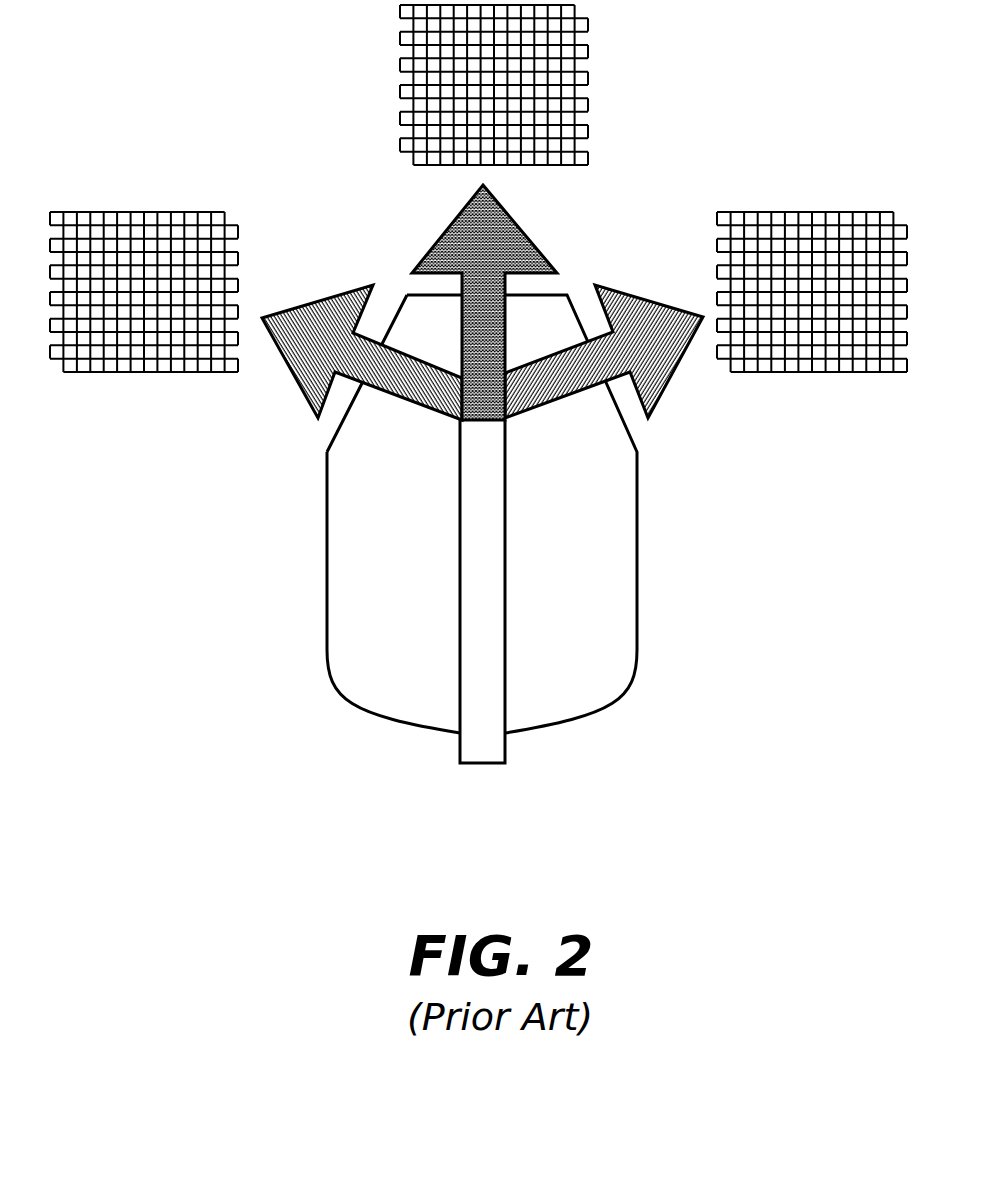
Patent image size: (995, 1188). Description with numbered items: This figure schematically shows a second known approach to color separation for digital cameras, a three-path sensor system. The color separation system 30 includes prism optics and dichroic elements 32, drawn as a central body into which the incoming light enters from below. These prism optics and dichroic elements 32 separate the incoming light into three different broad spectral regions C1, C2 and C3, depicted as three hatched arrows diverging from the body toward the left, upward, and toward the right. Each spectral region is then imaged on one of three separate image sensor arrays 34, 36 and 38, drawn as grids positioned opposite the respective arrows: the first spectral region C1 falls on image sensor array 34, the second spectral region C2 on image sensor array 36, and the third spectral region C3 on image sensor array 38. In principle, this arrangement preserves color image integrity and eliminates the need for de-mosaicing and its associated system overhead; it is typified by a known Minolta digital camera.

The color separation system 30 is at (733, 142).
The prism optics and dichroic elements 32 is at (623, 560).
The image sensor array 34 is at (152, 212).
The image sensor array 36 is at (583, 78).
The image sensor array 38 is at (832, 372).
The broad spectral region C1 is at (300, 310).
The broad spectral region C2 is at (503, 230).
The broad spectral region C3 is at (633, 308).